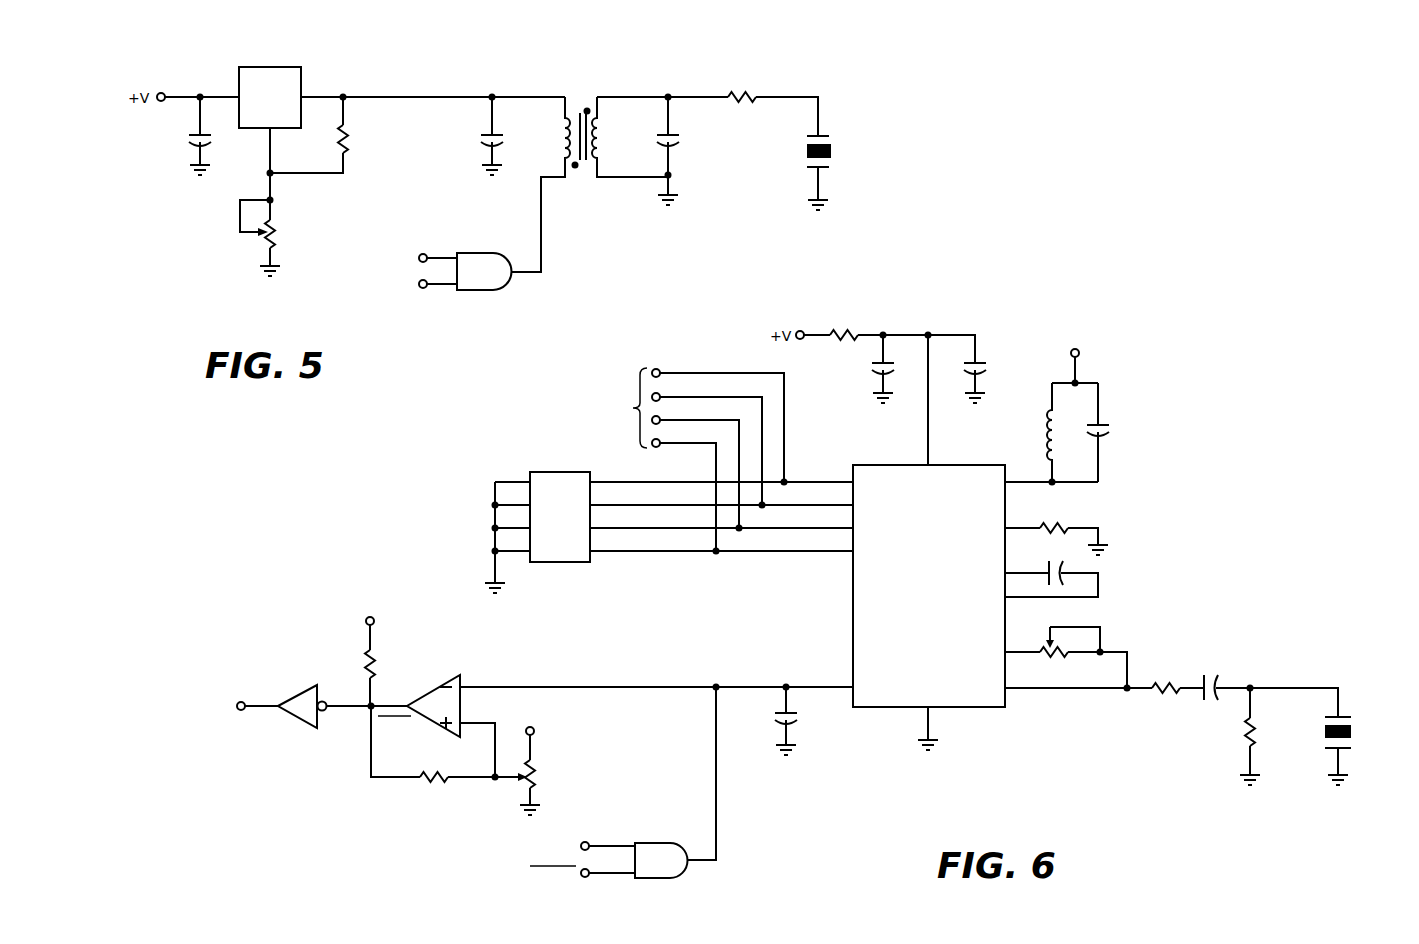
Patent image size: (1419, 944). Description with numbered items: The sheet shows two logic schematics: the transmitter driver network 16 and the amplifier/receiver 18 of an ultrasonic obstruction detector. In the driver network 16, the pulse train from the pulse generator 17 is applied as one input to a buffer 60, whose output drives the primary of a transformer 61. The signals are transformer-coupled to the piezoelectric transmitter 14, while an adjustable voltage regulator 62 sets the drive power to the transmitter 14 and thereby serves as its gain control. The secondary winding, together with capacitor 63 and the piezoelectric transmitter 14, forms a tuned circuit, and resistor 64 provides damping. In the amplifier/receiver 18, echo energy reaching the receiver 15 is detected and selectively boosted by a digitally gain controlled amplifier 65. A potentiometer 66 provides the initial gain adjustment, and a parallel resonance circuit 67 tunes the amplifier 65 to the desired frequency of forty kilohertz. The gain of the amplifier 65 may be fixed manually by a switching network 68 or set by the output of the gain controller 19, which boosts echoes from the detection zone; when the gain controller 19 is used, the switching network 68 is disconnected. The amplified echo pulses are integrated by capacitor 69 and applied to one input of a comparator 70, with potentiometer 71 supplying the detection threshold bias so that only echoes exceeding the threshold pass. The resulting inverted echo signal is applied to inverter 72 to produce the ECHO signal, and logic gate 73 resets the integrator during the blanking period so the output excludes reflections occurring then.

In FIG. 5, the piezoelectric transmitter 14 is at (833, 152).
In FIG. 6, the receiver 15 is at (1352, 730).
In FIG. 5, the driver network 16 is at (421, 152).
In FIG. 5, the pulse generator 17 is at (380, 283).
In FIG. 6, the amplifier/receiver 18 is at (731, 621).
In FIG. 6, the gain controller 19 is at (659, 461).
In FIG. 5, the buffer 60 is at (475, 292).
In FIG. 5, the transformer 61 is at (583, 88).
In FIG. 5, the adjustable voltage regulator 62 is at (278, 77).
In FIG. 5, the capacitor 63 is at (680, 140).
In FIG. 5, the resistor 64 is at (745, 90).
In FIG. 6, the digitally gain controlled amplifier 65 is at (968, 707).
In FIG. 6, the potentiometer 66 is at (1059, 666).
In FIG. 6, the parallel resonance circuit 67 is at (1116, 406).
In FIG. 6, the switching network 68 is at (562, 558).
In FIG. 6, the capacitor 69 is at (800, 722).
In FIG. 6, the comparator 70 is at (434, 695).
In FIG. 6, the potentiometer 71 is at (554, 769).
In FIG. 6, the inverter 72 is at (301, 696).
In FIG. 6, the logic gate 73 is at (654, 846).